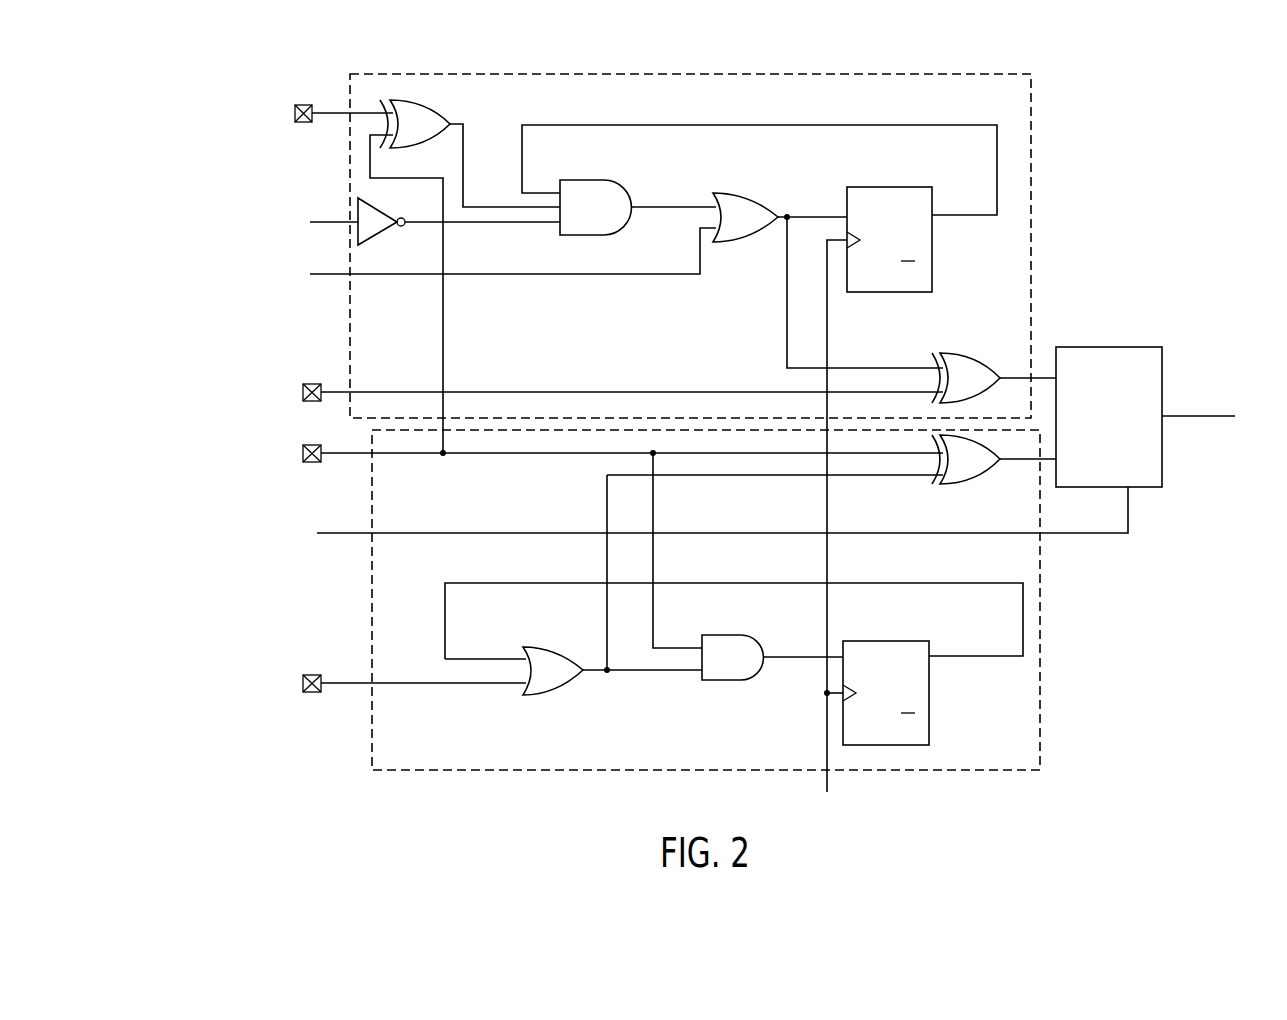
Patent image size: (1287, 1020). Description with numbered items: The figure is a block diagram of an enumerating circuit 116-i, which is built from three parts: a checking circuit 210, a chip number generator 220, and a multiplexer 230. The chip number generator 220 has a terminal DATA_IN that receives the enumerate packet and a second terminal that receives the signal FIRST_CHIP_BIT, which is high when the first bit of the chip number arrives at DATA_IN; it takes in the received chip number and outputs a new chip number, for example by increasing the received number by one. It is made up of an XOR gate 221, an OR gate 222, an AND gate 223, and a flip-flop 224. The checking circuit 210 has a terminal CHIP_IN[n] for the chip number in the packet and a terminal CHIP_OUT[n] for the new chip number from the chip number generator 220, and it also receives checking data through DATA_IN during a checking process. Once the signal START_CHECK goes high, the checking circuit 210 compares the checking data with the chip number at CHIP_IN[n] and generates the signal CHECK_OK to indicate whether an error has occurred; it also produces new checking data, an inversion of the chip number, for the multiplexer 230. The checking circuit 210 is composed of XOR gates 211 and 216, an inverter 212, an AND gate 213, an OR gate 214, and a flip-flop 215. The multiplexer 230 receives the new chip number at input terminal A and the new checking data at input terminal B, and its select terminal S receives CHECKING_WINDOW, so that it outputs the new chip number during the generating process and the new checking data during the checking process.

The enumerating circuit 116-i is at (200, 132).
The checking circuit 210 is at (1031, 99).
The XOR gate 211 is at (416, 106).
The inverter 212 is at (378, 205).
The AND gate 213 is at (590, 180).
The OR gate 214 is at (747, 196).
The flip-flop 215 is at (898, 187).
The XOR gate 216 is at (966, 360).
The chip number generator 220 is at (1040, 589).
The XOR gate 221 is at (988, 471).
The OR gate 222 is at (545, 649).
The AND gate 223 is at (724, 636).
The flip-flop 224 is at (865, 641).
The multiplexer 230 is at (1113, 347).